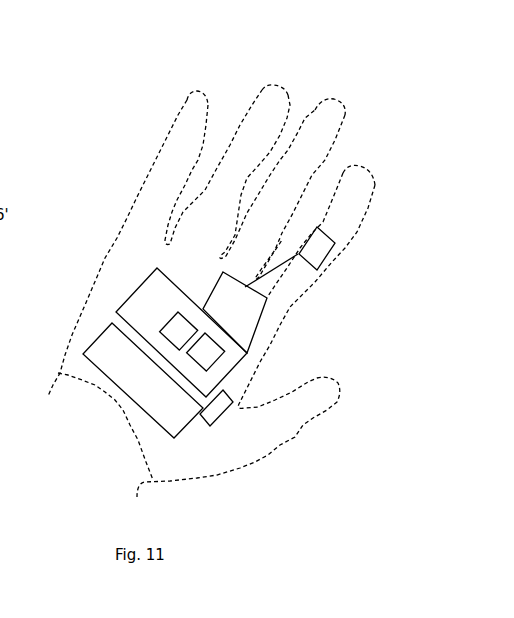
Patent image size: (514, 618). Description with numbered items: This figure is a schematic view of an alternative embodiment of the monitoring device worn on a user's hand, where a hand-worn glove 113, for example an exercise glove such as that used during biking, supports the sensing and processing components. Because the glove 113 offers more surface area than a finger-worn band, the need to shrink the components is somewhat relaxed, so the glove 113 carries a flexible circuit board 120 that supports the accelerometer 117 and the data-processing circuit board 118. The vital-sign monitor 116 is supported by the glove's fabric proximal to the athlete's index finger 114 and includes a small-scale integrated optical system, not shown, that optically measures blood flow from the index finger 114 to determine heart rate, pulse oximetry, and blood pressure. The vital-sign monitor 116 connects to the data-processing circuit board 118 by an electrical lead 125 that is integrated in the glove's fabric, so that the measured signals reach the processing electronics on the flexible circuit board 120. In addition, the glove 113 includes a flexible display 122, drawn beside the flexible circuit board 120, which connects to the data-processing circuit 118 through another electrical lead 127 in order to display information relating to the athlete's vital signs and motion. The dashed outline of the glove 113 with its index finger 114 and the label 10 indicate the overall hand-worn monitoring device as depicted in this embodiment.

The glove 10 is at (52, 385).
The hand-worn glove 113 is at (278, 445).
The index finger 114 is at (383, 190).
The vital-sign monitor 116 is at (327, 256).
The accelerometer 117 is at (223, 354).
The data-processing circuit board 118 is at (200, 313).
The flexible circuit board 120 is at (173, 310).
The flexible display 122 is at (134, 366).
The electrical lead 125 is at (202, 307).
The electrical lead 127 is at (211, 423).